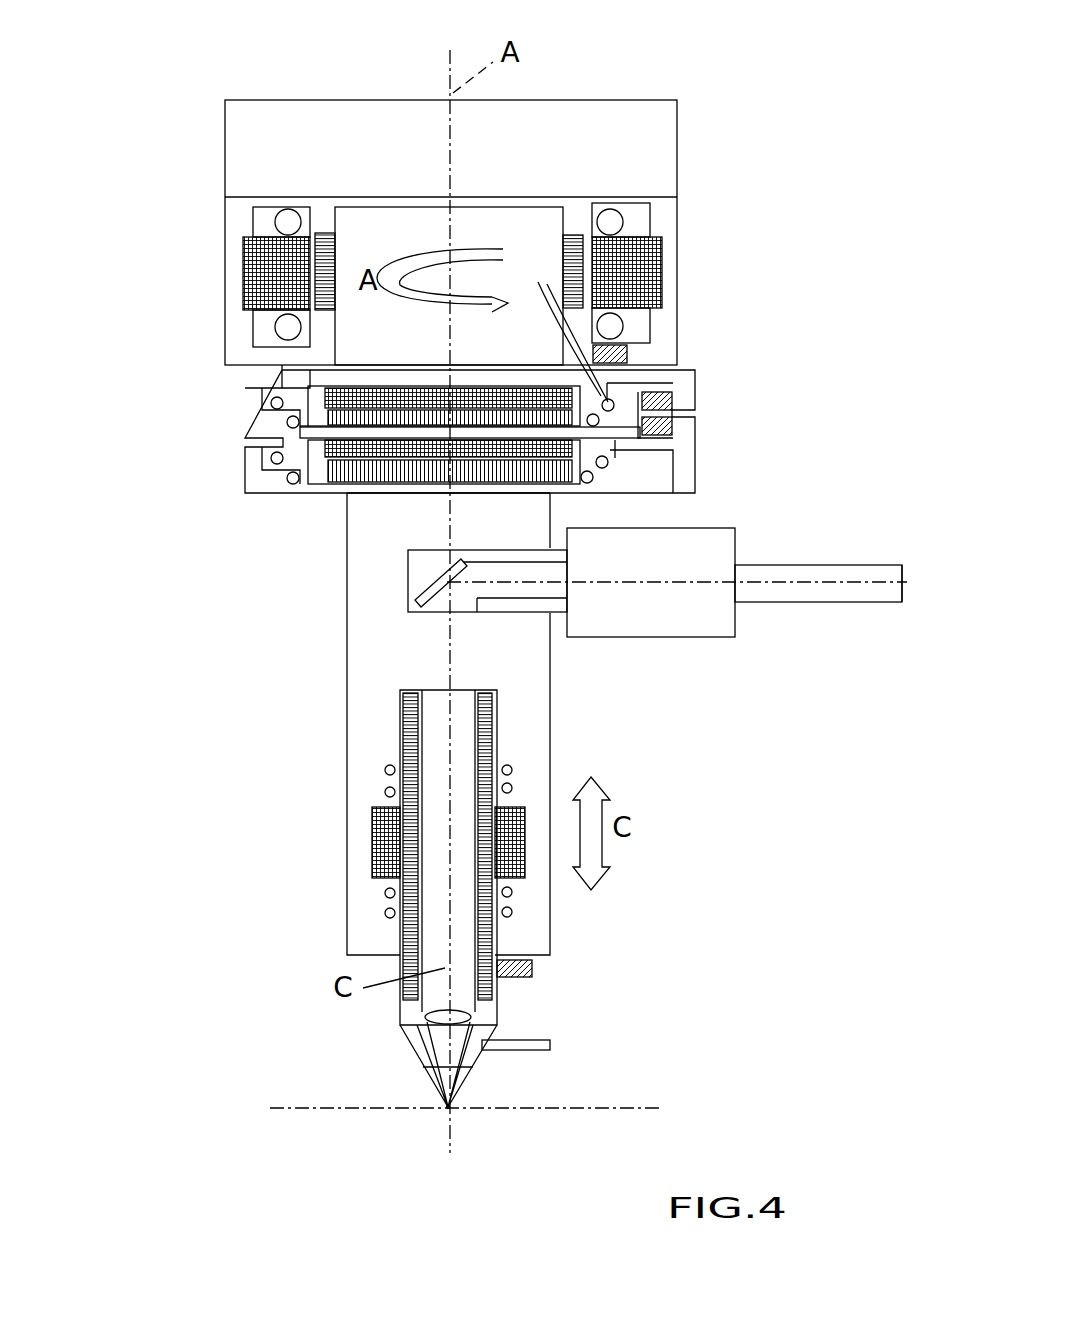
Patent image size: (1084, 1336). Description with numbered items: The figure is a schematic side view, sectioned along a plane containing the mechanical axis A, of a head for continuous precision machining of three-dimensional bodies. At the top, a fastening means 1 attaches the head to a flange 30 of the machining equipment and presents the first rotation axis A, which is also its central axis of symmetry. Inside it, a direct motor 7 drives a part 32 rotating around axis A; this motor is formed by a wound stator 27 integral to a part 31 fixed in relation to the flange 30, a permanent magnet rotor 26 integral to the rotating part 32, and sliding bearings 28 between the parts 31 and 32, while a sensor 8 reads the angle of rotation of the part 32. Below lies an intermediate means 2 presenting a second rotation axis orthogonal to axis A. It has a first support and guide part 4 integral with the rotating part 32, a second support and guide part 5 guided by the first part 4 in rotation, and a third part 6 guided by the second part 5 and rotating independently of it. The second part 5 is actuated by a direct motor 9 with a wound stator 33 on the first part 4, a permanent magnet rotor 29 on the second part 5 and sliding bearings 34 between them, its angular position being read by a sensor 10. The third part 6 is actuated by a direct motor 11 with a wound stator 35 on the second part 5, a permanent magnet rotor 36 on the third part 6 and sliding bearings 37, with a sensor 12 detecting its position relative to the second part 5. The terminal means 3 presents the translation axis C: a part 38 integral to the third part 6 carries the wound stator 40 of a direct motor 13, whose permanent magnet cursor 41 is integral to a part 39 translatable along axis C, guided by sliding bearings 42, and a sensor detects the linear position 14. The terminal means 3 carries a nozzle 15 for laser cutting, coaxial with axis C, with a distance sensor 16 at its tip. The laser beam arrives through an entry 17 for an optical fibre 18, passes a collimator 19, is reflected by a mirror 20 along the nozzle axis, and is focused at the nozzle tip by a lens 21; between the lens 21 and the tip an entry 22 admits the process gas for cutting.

The fastening means 1 is at (207, 255).
The intermediate means 2 is at (250, 513).
The terminal means 3 is at (275, 768).
The first support and guide part 4 is at (292, 382).
The second support and guide part 5 is at (477, 430).
The third part 6 is at (511, 493).
The direct motor 7 is at (323, 217).
The sensor 8 is at (627, 357).
The direct motor 9 is at (323, 415).
The sensor 10 is at (673, 400).
The direct motor 11 is at (320, 472).
The sensor 12 is at (673, 425).
The direct motor 13 is at (363, 858).
The sensor 14 is at (533, 977).
The nozzle 15 is at (402, 1035).
The distance sensor 16 is at (443, 1077).
The entry 17 is at (847, 603).
The optical fibre 18 is at (807, 578).
The collimator 19 is at (723, 623).
The mirror 20 is at (436, 590).
The lens 21 is at (455, 1022).
The entry 22 is at (550, 1045).
The permanent magnet rotor 26 is at (572, 235).
The wound stator 27 is at (652, 277).
The sliding bearings 28 is at (613, 216).
The permanent magnet rotor 29 is at (383, 420).
The flange 30 is at (620, 130).
The part 31 is at (670, 213).
The part 32 is at (372, 217).
The wound stator 33 is at (352, 388).
The sliding bearings 34 is at (561, 319).
The wound stator 35 is at (490, 450).
The permanent magnet rotor 36 is at (408, 478).
The sliding bearings 37 is at (590, 485).
The part 38 is at (367, 630).
The part 39 is at (460, 747).
The wound stator 40 is at (522, 825).
The permanent magnet cursor 41 is at (500, 688).
The sliding bearings 42 is at (383, 772).